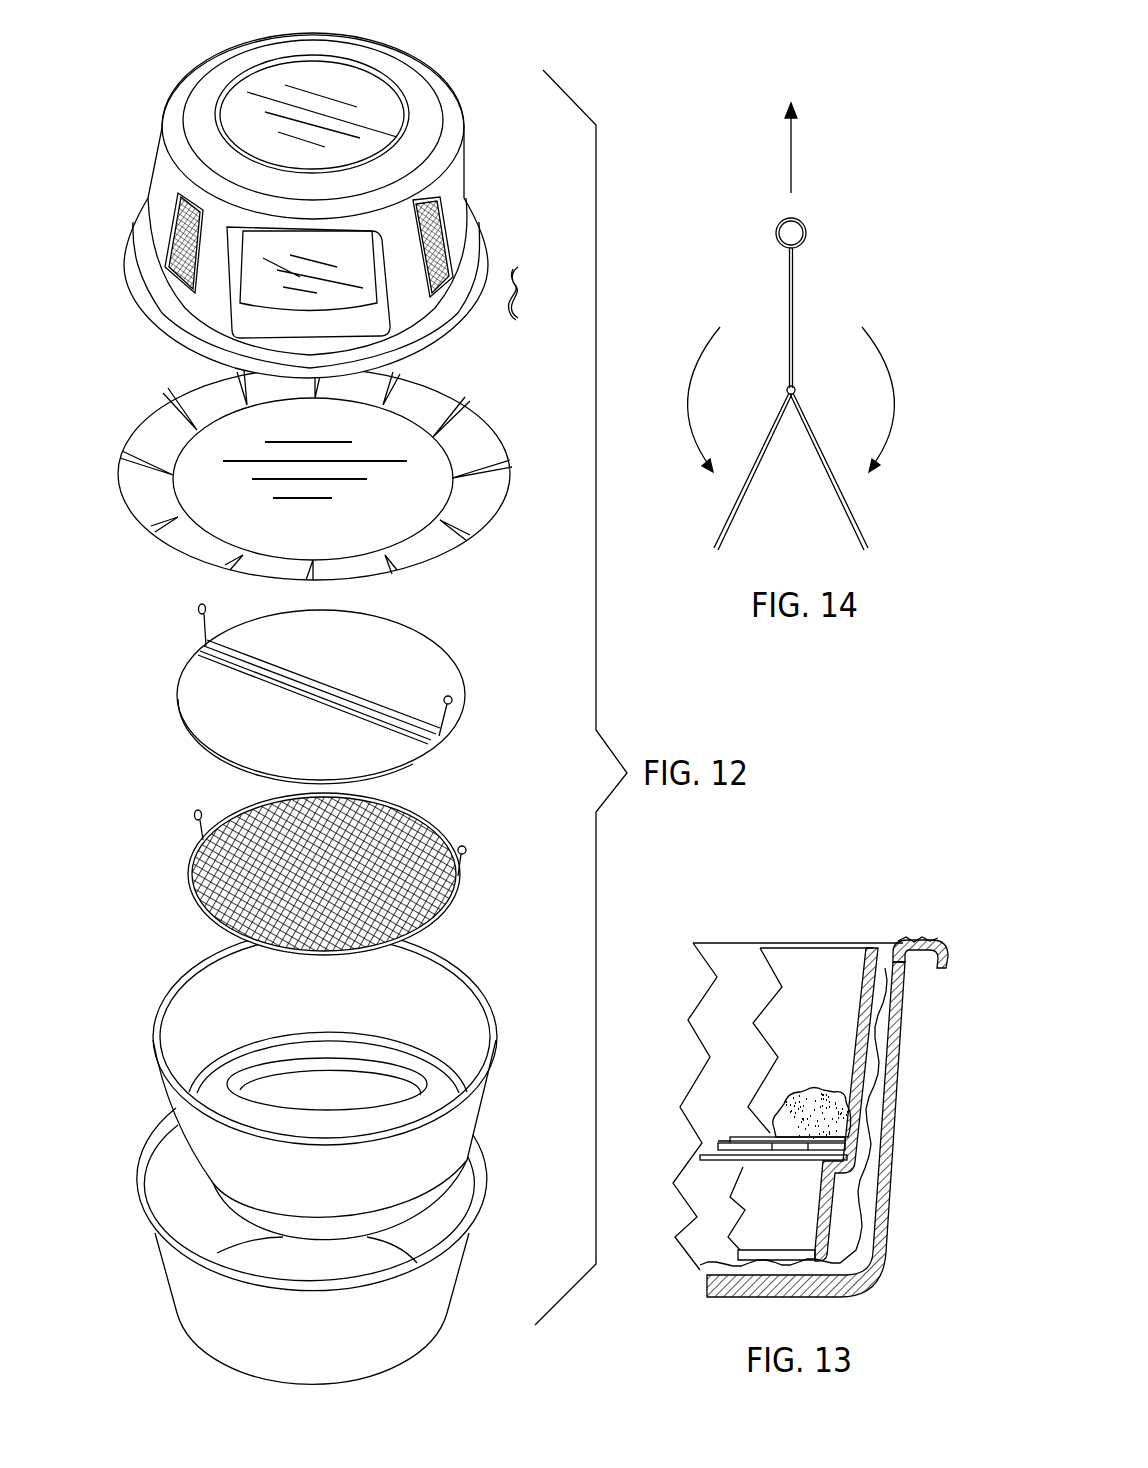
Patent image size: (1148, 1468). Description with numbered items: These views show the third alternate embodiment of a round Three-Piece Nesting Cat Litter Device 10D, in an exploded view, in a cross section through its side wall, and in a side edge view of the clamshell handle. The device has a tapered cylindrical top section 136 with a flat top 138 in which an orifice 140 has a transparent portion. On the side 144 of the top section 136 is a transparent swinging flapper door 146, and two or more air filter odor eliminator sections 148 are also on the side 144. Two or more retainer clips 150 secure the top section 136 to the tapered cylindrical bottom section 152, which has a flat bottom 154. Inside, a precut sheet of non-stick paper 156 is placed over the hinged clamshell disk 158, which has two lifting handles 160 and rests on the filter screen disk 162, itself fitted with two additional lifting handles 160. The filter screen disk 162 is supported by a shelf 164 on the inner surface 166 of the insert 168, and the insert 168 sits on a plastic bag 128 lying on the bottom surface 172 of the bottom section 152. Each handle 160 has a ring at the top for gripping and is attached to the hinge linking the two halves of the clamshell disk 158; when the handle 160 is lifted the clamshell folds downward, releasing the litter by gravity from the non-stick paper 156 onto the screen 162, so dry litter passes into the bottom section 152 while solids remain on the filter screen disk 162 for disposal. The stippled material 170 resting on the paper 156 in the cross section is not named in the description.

In FIG. 12, the round Three-Piece Nesting Cat Litter Device 10D is at (155, 76).
In FIG. 13, the plastic bag 128 is at (922, 940).
In FIG. 12, the tapered cylindrical top section 136 is at (166, 176).
In FIG. 12, the flat top 138 is at (403, 157).
In FIG. 12, the orifice 140 is at (378, 128).
In FIG. 12, the side 144 is at (162, 227).
In FIG. 12, the transparent swinging flapper door 146 is at (258, 272).
In FIG. 12, the air filter odor eliminator sections 148 is at (172, 253).
In FIG. 12, the retainer clips 150 is at (520, 275).
In FIG. 12, the tapered cylindrical bottom section 152 is at (193, 1287).
In FIG. 13, the tapered cylindrical bottom section 152 is at (896, 1110).
In FIG. 12, the flat bottom 154 is at (513, 1357).
In FIG. 12, the precut sheet of non-stick paper 156 is at (203, 497).
In FIG. 13, the precut sheet of non-stick paper 156 is at (733, 1138).
In FIG. 12, the hinged clamshell disk 158 is at (390, 665).
In FIG. 14, the hinged clamshell disk 158 is at (728, 520).
In FIG. 13, the hinged clamshell disk 158 is at (717, 1146).
In FIG. 12, the lifting handles 160 is at (196, 606).
In FIG. 14, the lifting handles 160 is at (806, 229).
In FIG. 12, the filter screen disk 162 is at (415, 858).
In FIG. 13, the filter screen disk 162 is at (702, 1157).
In FIG. 12, the shelf 164 is at (437, 970).
In FIG. 13, the shelf 164 is at (848, 1178).
In FIG. 12, the inner surface 166 is at (180, 1028).
In FIG. 12, the insert 168 is at (170, 978).
In FIG. 13, the insert 168 is at (876, 947).
In FIG. 13, the fuel 170 is at (828, 1112).
In FIG. 13, the bottom surface 172 is at (704, 1268).